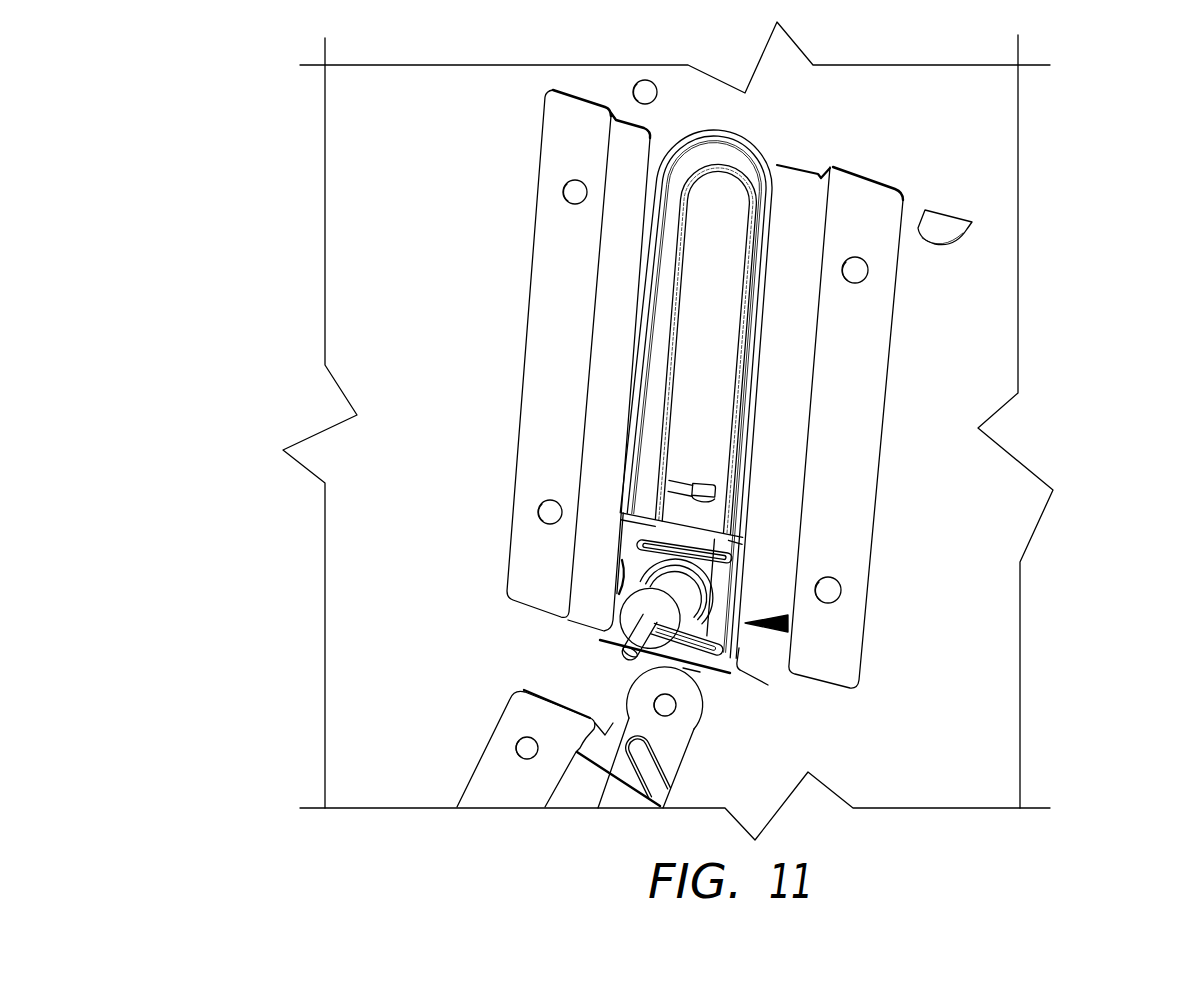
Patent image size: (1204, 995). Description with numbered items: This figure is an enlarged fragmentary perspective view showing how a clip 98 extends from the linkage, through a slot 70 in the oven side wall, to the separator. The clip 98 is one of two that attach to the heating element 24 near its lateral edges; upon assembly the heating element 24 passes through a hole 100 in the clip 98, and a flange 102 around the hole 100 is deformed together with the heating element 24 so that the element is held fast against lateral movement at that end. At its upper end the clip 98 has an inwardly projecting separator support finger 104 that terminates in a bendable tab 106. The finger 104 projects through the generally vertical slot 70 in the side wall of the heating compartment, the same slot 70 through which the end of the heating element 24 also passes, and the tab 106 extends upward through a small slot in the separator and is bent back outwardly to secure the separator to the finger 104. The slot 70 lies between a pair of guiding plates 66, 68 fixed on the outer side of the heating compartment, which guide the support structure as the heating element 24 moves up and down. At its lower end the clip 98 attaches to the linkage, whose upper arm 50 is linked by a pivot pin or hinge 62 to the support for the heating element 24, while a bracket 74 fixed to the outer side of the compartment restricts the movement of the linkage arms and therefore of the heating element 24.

The heating element 24 is at (683, 668).
The upper arm 50 is at (613, 723).
The pivot pin or hinge 62 is at (595, 723).
The guiding plate 66 is at (893, 323).
The guiding plate 68 is at (528, 262).
The slot 70 is at (710, 320).
The bracket 74 is at (483, 737).
The clip 98 is at (788, 624).
The hole 100 is at (675, 630).
The flange 102 is at (707, 588).
The separator support finger 104 is at (693, 528).
The bendable tab 106 is at (703, 493).